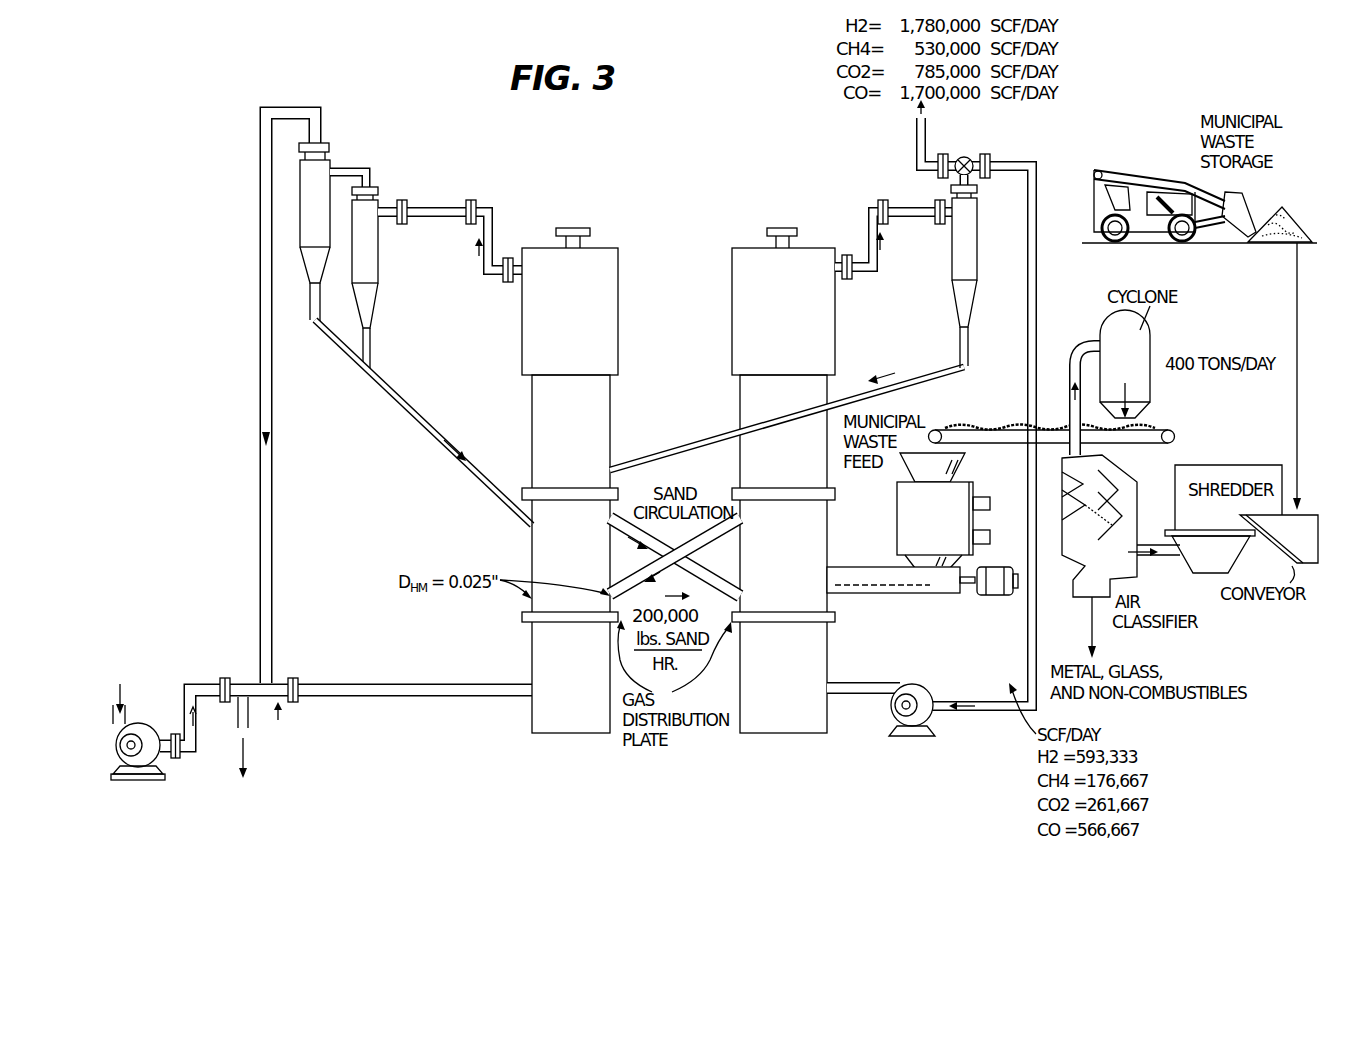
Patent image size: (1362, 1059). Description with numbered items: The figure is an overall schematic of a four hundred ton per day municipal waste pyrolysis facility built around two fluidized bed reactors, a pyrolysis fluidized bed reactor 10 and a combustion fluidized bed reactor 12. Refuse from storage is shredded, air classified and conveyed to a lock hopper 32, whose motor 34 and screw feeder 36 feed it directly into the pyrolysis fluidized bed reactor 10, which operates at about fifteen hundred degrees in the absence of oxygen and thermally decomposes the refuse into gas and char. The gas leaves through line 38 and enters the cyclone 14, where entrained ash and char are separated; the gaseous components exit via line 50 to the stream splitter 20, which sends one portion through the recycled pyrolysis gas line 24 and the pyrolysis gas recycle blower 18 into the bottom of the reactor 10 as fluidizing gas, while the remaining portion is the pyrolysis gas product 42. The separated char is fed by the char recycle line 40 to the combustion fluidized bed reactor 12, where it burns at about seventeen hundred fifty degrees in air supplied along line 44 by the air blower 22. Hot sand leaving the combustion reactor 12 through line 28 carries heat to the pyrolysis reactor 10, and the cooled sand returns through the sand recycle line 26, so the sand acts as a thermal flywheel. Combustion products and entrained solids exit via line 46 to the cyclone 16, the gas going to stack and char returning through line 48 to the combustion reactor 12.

The pyrolysis fluidized bed reactor 10 is at (797, 364).
The combustion fluidized bed reactor 12 is at (579, 364).
The cyclone 14 is at (972, 226).
The cyclone 16 is at (326, 230).
The pyrolysis gas recycle blower 18 is at (926, 727).
The stream splitter 20 is at (964, 157).
The air blower 22 is at (136, 780).
The recycled pyrolysis gas line 24 is at (1039, 306).
The sand recycle line 26 is at (723, 534).
The hot sand line 28 is at (622, 534).
The lock hopper 32 is at (898, 521).
The motor 34 is at (989, 597).
The screw feeder 36 is at (844, 598).
The pyrolysis gas line 38 is at (870, 209).
The char recycle line 40 is at (949, 366).
The pyrolysis gas product 42 is at (915, 153).
The air line 44 is at (505, 698).
The combustion products line 46 is at (438, 220).
The char recycle line 48 is at (393, 392).
The cyclone gas outlet line 50 is at (968, 179).